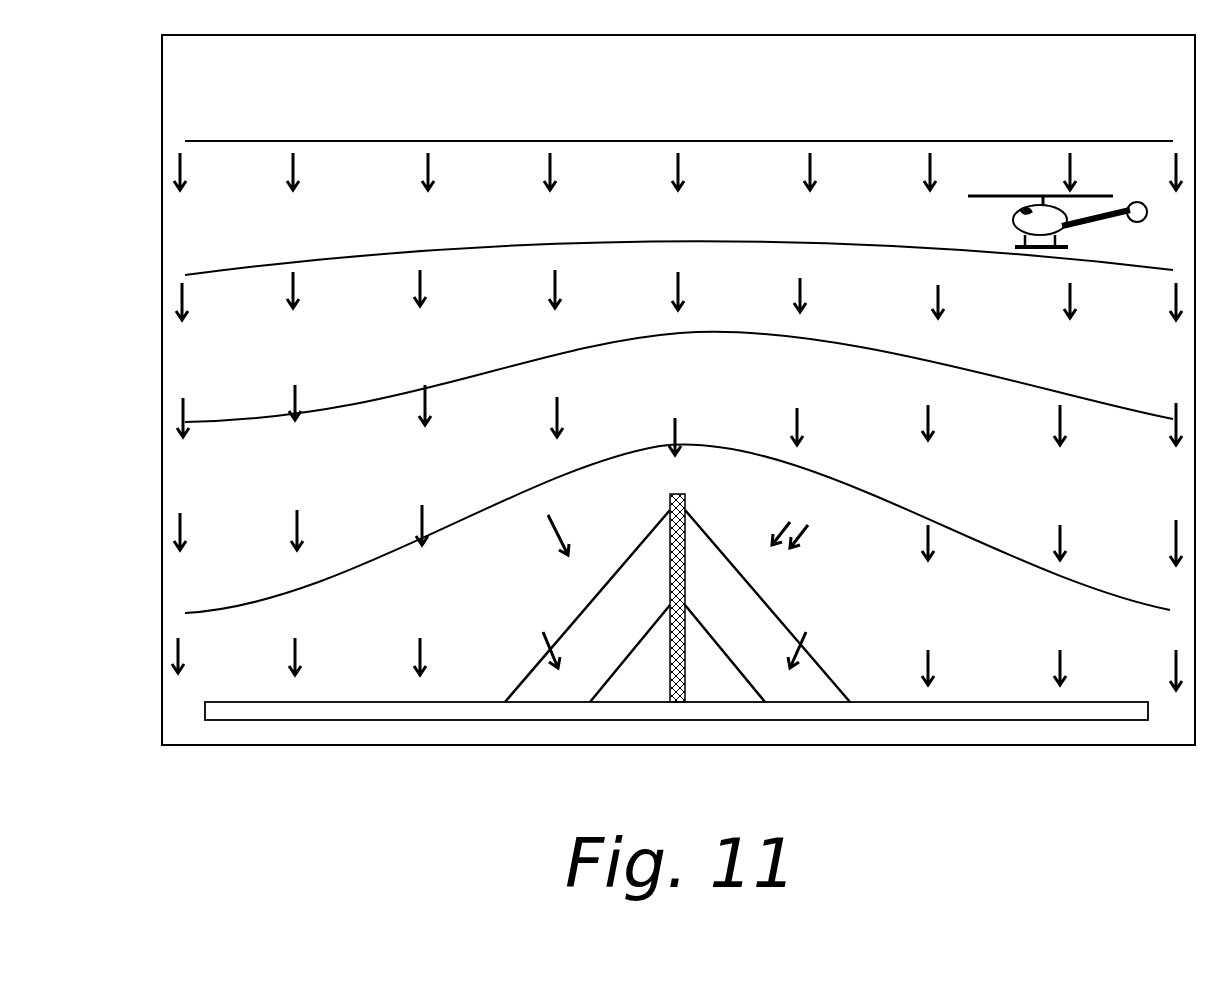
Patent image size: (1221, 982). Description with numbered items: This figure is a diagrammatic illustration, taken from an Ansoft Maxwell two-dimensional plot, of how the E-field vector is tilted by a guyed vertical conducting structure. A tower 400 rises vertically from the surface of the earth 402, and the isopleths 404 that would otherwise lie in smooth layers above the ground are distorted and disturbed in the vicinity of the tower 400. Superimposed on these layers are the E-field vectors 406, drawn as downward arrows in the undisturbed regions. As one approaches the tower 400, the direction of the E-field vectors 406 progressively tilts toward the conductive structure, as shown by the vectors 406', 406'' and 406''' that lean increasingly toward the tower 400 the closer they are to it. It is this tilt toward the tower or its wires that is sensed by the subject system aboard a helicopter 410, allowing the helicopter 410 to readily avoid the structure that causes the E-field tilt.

The tower 400 is at (685, 494).
The surface of the earth 402 is at (410, 720).
The isopleths 404 is at (768, 139).
The E-field vectors 406 is at (678, 236).
The tilted E-field vectors 406' is at (679, 420).
The tilted E-field vectors 406'' is at (678, 542).
The tilted E-field vectors 406''' is at (677, 655).
The helicopter 410 is at (1062, 232).